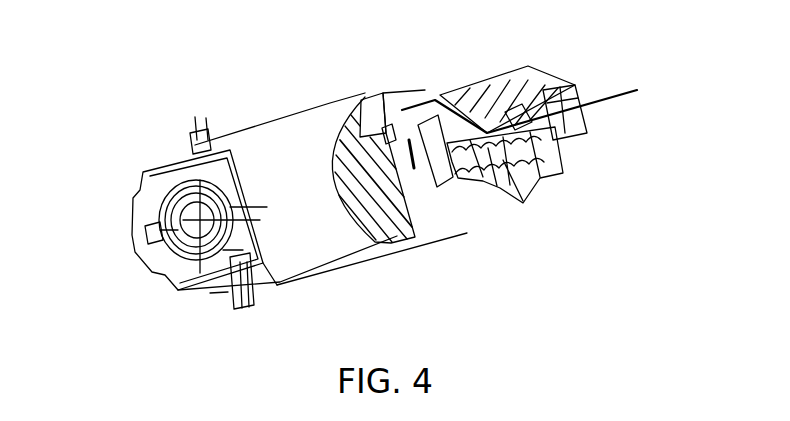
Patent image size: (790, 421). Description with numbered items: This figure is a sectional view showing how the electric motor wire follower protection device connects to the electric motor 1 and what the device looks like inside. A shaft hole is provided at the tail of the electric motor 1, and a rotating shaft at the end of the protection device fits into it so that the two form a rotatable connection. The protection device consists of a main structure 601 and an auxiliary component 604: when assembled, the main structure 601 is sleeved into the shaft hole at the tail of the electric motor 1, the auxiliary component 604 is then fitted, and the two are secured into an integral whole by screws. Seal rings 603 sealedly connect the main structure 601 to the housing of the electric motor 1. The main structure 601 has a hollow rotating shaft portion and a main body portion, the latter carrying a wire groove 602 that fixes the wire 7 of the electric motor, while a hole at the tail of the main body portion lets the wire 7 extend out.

The electric motor 1 is at (300, 155).
The wire 7 is at (613, 97).
The main structure 601 is at (462, 90).
The wire groove 602 is at (517, 122).
The seal rings 603 is at (410, 137).
The auxiliary component 604 is at (440, 187).